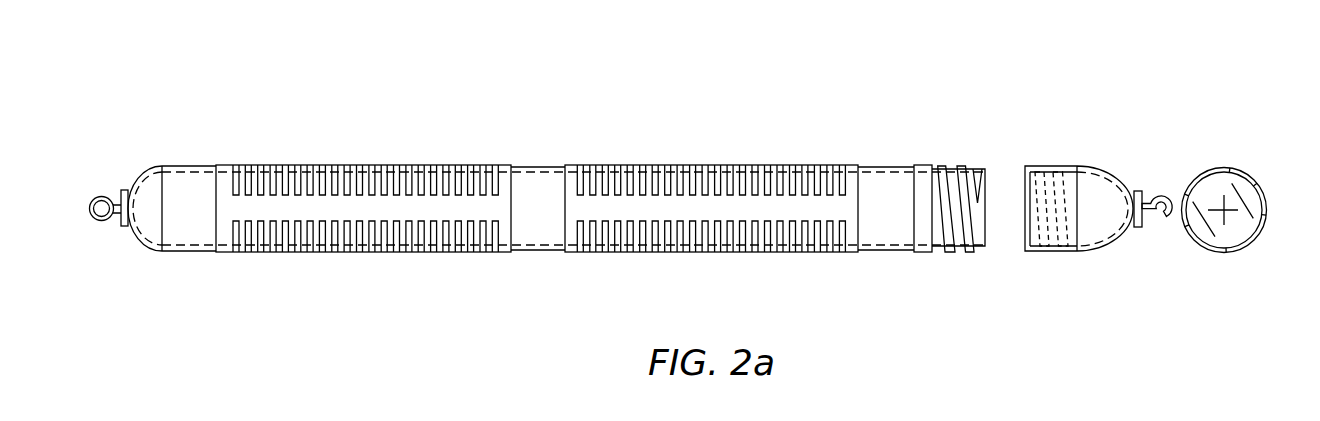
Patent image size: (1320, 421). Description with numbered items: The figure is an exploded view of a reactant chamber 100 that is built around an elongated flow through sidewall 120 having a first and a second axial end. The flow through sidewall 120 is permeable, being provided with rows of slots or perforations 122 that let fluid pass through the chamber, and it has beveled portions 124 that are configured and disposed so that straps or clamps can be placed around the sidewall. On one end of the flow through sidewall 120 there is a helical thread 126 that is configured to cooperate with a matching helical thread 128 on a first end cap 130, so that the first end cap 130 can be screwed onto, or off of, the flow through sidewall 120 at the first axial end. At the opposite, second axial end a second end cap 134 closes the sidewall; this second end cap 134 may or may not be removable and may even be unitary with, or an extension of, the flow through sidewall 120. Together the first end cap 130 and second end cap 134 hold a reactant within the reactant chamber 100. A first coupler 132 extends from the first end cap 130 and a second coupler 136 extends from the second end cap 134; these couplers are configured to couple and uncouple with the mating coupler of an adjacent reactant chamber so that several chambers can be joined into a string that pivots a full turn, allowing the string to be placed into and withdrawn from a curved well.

The reactant chamber 100 is at (477, 167).
The flow through sidewall 120 is at (388, 170).
The slots or perforations 122 is at (347, 178).
The beveled portions 124 is at (192, 182).
The helical thread 126 is at (953, 187).
The helical thread 128 is at (1048, 182).
The first end cap 130 is at (1094, 165).
The first coupler 132 is at (1162, 197).
The second end cap 134 is at (154, 166).
The second coupler 136 is at (97, 196).